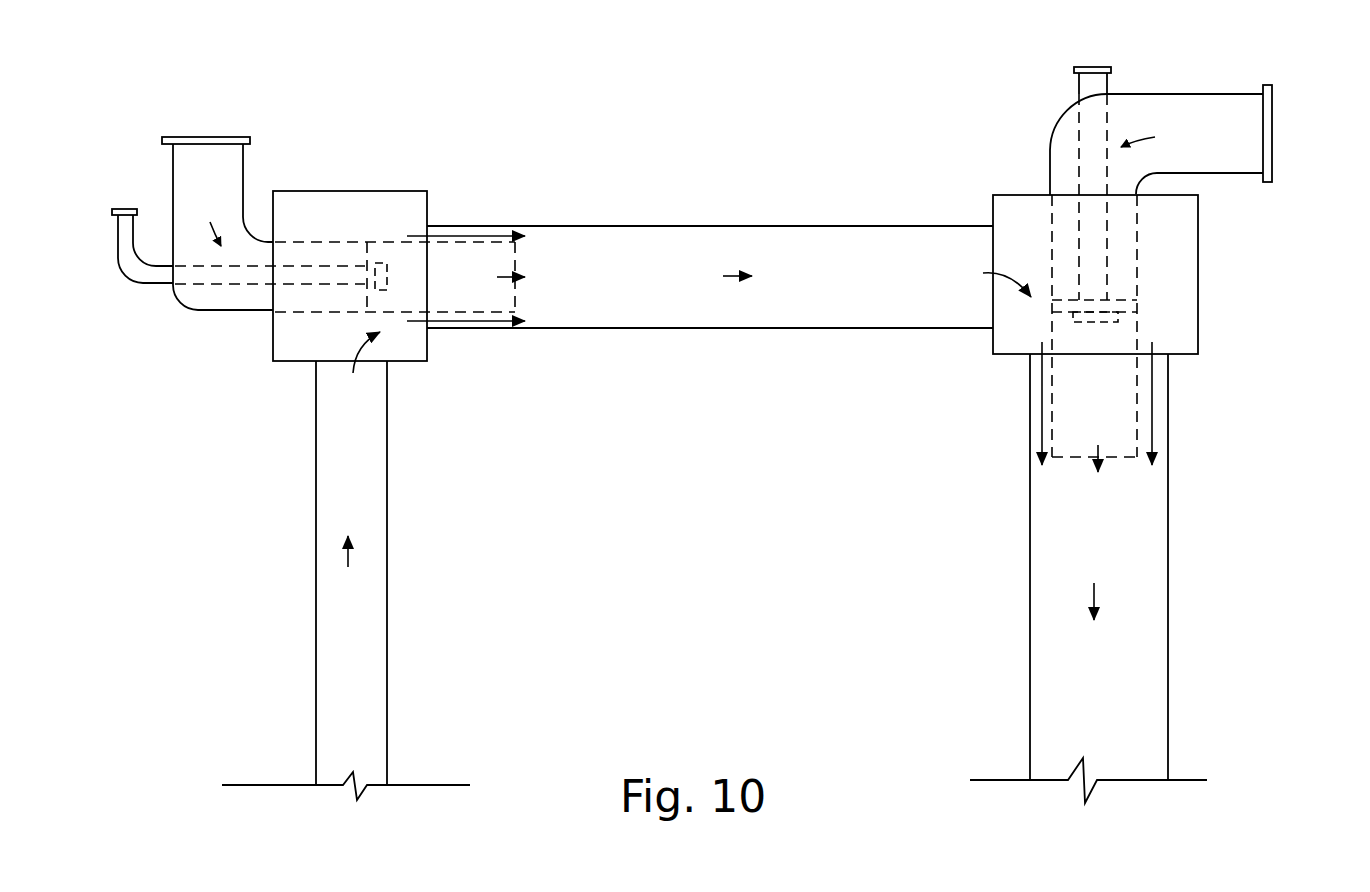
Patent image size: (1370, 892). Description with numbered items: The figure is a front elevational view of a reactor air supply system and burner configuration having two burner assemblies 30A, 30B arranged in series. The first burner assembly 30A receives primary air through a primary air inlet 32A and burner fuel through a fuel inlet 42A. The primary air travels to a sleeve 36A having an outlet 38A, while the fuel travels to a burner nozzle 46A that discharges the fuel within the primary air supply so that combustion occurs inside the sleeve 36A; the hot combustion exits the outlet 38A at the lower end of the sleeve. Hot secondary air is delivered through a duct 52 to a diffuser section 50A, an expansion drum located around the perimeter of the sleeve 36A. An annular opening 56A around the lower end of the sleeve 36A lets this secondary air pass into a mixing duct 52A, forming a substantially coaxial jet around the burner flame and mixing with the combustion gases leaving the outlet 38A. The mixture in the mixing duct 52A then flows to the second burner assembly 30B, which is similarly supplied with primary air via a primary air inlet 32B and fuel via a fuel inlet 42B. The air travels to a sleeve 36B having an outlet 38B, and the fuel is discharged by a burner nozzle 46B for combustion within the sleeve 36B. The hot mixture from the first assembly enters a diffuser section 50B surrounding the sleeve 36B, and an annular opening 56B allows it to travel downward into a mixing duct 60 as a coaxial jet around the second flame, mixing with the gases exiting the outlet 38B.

The first burner assembly 30A is at (327, 155).
The primary air inlet 32A is at (206, 133).
The sleeve 36A is at (394, 235).
The outlet 38A is at (517, 296).
The fuel inlet 42A is at (126, 205).
The burner nozzle 46A is at (383, 293).
The diffuser section 50A is at (363, 188).
The duct 52 is at (333, 627).
The mixing duct 52A is at (710, 318).
The annular opening 56A is at (477, 232).
The second burner assembly 30B is at (988, 155).
The primary air inlet 32B is at (1275, 121).
The sleeve 36B is at (1146, 339).
The outlet 38B is at (1112, 460).
The fuel inlet 42B is at (1099, 61).
The burner nozzle 46B is at (1070, 314).
The diffuser section 50B is at (990, 210).
The annular opening 56B is at (1158, 410).
The mixing duct 60 is at (1147, 608).